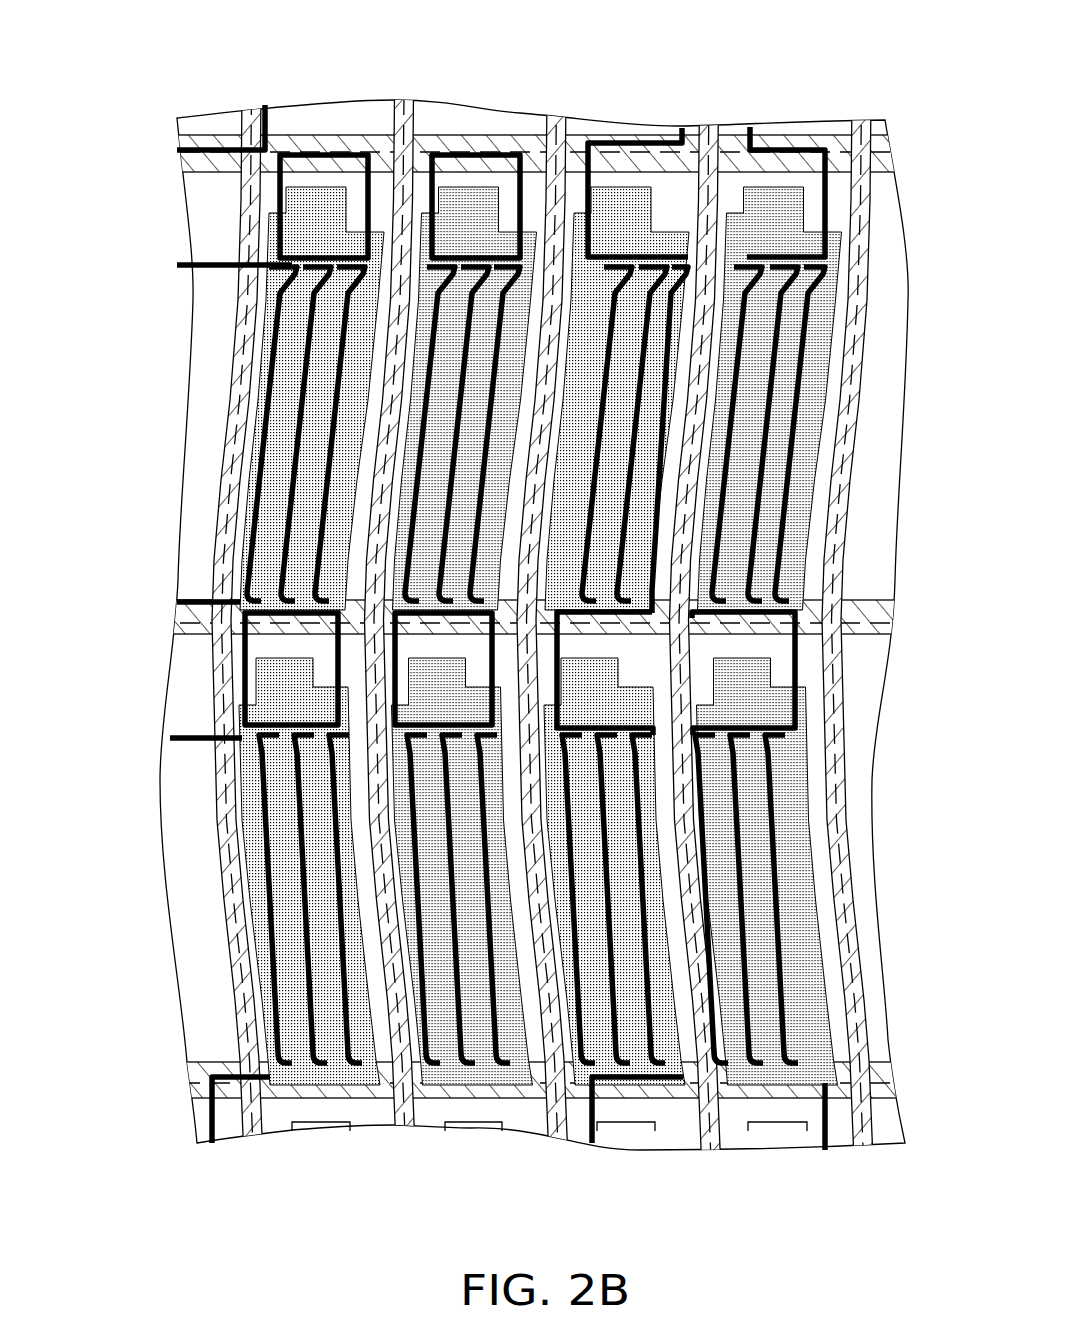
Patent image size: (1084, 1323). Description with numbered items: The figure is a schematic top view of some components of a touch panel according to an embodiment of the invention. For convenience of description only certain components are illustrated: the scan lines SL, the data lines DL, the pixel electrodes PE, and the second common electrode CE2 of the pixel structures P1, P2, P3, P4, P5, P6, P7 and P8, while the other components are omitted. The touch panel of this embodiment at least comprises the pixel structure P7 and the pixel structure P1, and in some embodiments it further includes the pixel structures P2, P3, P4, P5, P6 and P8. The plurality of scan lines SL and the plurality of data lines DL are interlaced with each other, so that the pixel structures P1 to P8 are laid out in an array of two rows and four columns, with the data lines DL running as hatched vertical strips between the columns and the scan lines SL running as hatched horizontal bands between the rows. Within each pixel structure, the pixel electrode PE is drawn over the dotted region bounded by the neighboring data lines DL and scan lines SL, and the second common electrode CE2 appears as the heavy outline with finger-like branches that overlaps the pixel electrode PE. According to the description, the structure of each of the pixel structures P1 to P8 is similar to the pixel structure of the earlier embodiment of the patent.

The data line DL is at (244, 112).
The scan line SL is at (190, 152).
The pixel electrode PE is at (242, 793).
The second common electrode CE2 is at (683, 1080).
The pixel structure P1 is at (336, 128).
The pixel structure P2 is at (478, 128).
The pixel structure P3 is at (630, 128).
The pixel structure P4 is at (305, 1103).
The pixel structure P5 is at (480, 1103).
The pixel structure P6 is at (615, 1103).
The pixel structure P7 is at (827, 128).
The pixel structure P8 is at (830, 1103).